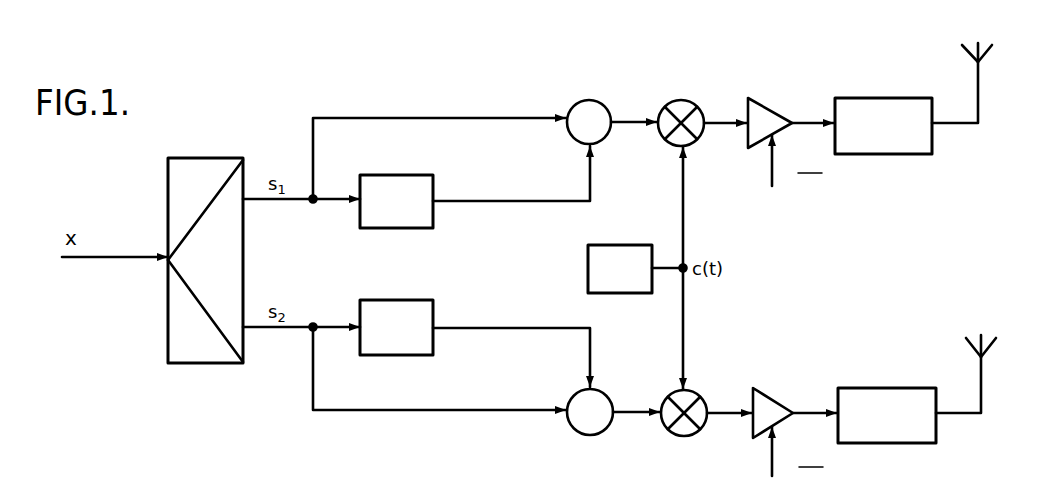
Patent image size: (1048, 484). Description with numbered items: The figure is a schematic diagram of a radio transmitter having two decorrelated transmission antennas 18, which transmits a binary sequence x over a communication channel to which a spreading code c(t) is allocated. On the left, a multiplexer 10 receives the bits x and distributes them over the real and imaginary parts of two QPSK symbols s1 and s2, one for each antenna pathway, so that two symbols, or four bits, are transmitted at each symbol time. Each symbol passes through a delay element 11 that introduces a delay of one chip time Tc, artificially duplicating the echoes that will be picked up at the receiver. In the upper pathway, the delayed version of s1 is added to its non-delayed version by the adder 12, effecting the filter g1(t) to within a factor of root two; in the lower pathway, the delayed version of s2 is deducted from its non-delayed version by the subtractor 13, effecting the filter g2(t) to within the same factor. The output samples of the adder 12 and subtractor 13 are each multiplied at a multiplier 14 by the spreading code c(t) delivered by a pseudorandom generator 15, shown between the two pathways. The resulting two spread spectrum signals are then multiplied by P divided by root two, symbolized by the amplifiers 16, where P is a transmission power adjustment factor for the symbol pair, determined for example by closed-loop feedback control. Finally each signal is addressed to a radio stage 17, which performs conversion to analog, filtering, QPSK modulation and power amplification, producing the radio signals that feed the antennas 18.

The multiplexer 10 is at (203, 158).
The delay element 11 is at (408, 229).
The adder 12 is at (571, 104).
The subtractor 13 is at (580, 434).
The multiplier 14 is at (661, 103).
The pseudorandom generator 15 is at (588, 268).
The amplifier 16 is at (767, 98).
The radio stage 17 is at (872, 98).
The transmission antenna 18 is at (980, 92).